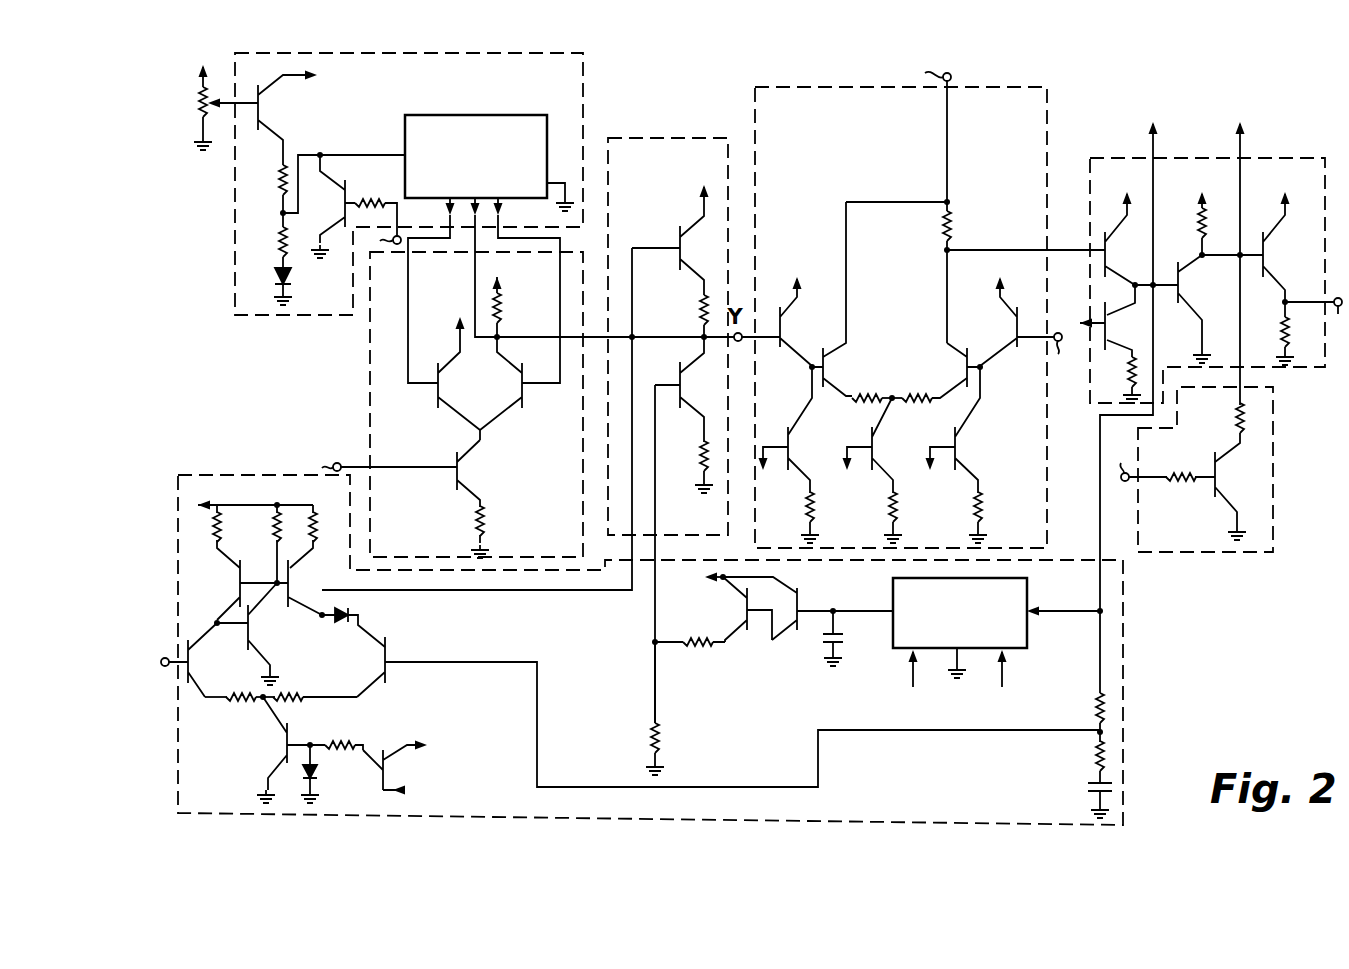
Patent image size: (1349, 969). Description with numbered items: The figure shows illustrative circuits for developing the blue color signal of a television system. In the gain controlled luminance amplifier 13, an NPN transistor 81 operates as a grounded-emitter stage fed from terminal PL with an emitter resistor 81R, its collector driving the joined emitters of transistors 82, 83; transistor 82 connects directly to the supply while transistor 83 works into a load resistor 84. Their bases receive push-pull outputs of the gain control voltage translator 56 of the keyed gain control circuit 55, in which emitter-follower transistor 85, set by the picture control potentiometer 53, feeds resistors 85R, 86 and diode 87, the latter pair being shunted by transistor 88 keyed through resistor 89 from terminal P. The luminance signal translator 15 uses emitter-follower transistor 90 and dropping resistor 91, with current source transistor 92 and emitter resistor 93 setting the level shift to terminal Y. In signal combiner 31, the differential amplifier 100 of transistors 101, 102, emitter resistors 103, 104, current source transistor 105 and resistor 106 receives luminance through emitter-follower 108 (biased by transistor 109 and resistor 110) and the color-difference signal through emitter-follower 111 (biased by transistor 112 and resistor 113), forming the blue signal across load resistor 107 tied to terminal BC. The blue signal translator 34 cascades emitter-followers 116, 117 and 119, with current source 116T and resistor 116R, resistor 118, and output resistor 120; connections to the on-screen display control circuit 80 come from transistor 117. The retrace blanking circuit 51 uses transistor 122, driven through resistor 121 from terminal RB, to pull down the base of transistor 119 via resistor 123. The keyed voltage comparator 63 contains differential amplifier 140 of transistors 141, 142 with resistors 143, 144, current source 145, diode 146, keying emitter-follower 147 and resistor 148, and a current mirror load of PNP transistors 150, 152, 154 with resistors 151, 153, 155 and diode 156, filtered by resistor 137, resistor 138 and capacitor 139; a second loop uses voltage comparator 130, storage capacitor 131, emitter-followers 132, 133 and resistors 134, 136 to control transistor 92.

The gain controlled luminance amplifier 13 is at (370, 390).
The luminance signal translator 15 is at (690, 138).
The signal combiner 31 is at (796, 87).
The blue signal translator 34 is at (1113, 158).
The retrace blanking circuit 51 is at (1208, 552).
The picture control potentiometer 53 is at (186, 136).
The keyed gain control circuit 55 is at (583, 97).
The gain control voltage translator 56 is at (522, 115).
The keyed voltage comparator 63 is at (1123, 632).
The on-screen display control circuit 80 is at (1223, 352).
The NPN transistor 81 is at (459, 466).
The emitter resistor 81R is at (483, 518).
The NPN transistor 82 is at (440, 386).
The NPN transistor 83 is at (521, 388).
The load resistor 84 is at (499, 312).
The NPN transistor 85 is at (260, 108).
The resistor 85R is at (283, 190).
The resistor 86 is at (283, 246).
The diode 87 is at (283, 279).
The NPN transistor 88 is at (344, 205).
The resistor 89 is at (374, 200).
The NPN transistor 90 is at (682, 246).
The dropping resistor 91 is at (701, 310).
The NPN current source transistor 92 is at (682, 389).
The emitter resistor 93 is at (700, 458).
The differential amplifier 100 is at (921, 309).
The NPN transistor 101 is at (826, 371).
The NPN transistor 102 is at (965, 370).
The resistor 103 is at (872, 405).
The resistor 104 is at (923, 405).
The NPN transistor 105 is at (874, 447).
The emitter resistor 106 is at (897, 520).
The load resistor 107 is at (950, 229).
The transistor 108 is at (782, 337).
The NPN transistor 109 is at (790, 447).
The emitter resistor 110 is at (814, 520).
The NPN transistor 111 is at (1015, 338).
The NPN transistor 112 is at (957, 447).
The emitter resistor 113 is at (982, 512).
The NPN transistor 116 is at (1107, 252).
The NPN transistor 116T is at (1101, 300).
The emitter resistor 116R is at (1134, 352).
The PNP transistor 117 is at (1181, 290).
The resistor 118 is at (1200, 227).
The NPN transistor 119 is at (1265, 252).
The resistor 120 is at (1282, 328).
The resistor 121 is at (1181, 484).
The NPN transistor 122 is at (1217, 480).
The resistor 123 is at (1237, 420).
The voltage comparator 130 is at (1027, 645).
The storage capacitor 131 is at (843, 639).
The NPN transistor 132 is at (802, 632).
The NPN transistor 133 is at (752, 632).
The resistor 134 is at (698, 637).
The resistor 136 is at (658, 742).
The series resistor 137 is at (1097, 694).
The resistor 138 is at (1096, 756).
The capacitor 139 is at (1096, 790).
The differential amplifier 140 is at (341, 684).
The NPN transistor 141 is at (199, 698).
The NPN transistor 142 is at (386, 678).
The resistor 143 is at (235, 704).
The resistor 144 is at (290, 704).
The NPN transistor 145 is at (285, 746).
The diode 146 is at (318, 774).
The NPN transistor 147 is at (404, 763).
The resistor 148 is at (343, 742).
The PNP load transistor 150 is at (198, 632).
The emitter resistor 151 is at (216, 570).
The PNP transistor 152 is at (246, 636).
The emitter resistor 153 is at (274, 528).
The PNP load transistor 154 is at (286, 606).
The emitter resistor 155 is at (316, 544).
The diode 156 is at (348, 623).